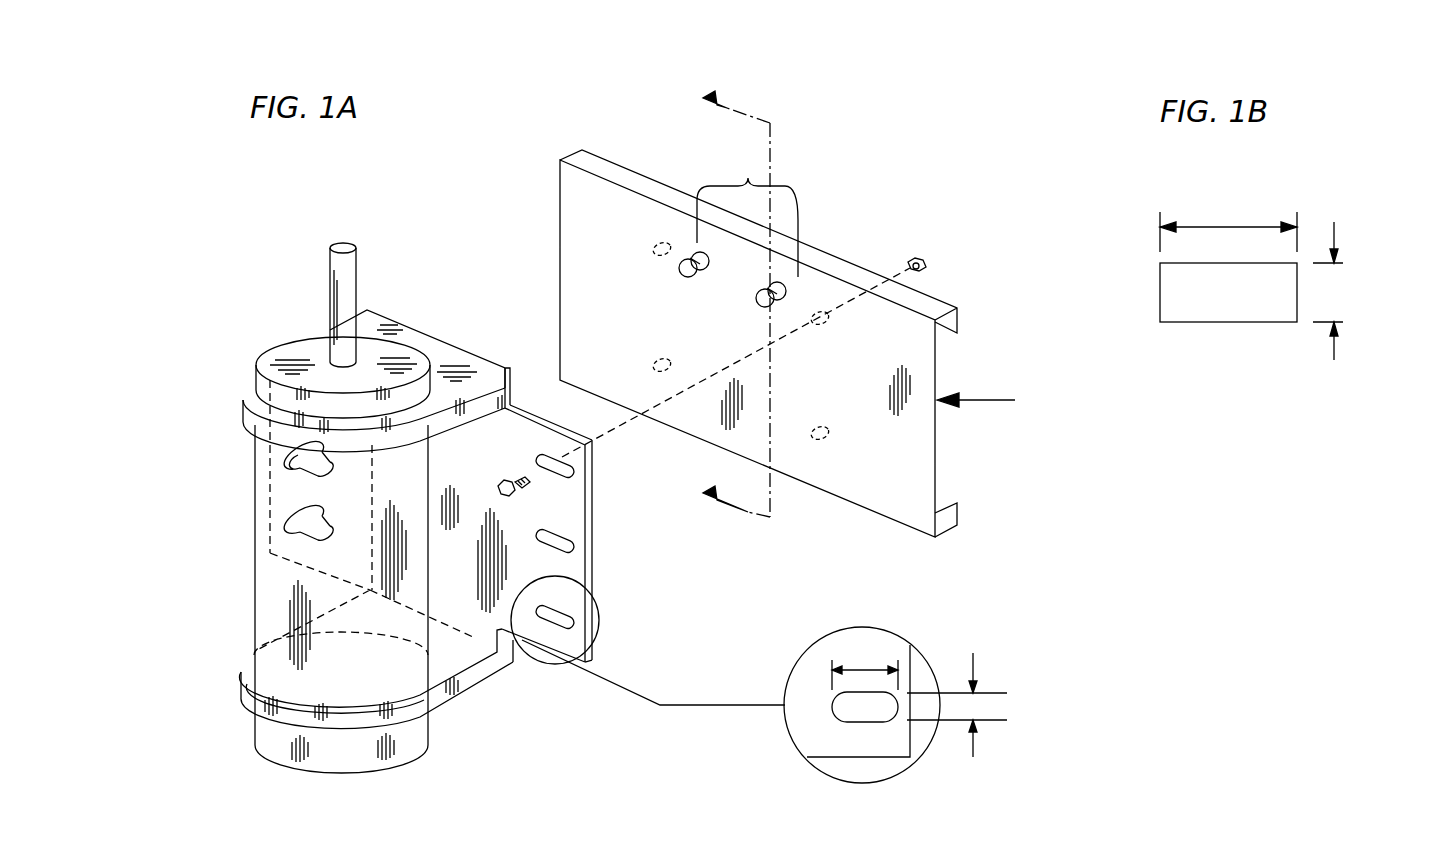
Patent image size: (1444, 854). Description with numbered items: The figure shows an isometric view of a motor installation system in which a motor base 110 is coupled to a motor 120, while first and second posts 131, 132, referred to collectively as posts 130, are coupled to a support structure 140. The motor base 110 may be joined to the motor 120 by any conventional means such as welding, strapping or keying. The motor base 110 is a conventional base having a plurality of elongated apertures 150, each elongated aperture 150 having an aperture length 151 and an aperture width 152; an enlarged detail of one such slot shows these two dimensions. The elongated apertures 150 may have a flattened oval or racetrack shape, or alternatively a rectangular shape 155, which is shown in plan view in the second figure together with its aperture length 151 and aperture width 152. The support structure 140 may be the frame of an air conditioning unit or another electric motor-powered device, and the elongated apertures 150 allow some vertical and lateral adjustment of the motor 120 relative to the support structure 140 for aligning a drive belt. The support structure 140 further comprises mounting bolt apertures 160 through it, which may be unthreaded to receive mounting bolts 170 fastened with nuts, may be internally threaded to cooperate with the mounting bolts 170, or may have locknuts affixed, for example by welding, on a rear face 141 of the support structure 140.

In FIG. 1A, the motor base 110 is at (570, 507).
In FIG. 1A, the motor 120 is at (241, 675).
In FIG. 1A, the posts 130 is at (747, 214).
In FIG. 1A, the first post 131 is at (683, 273).
In FIG. 1A, the second post 132 is at (760, 303).
In FIG. 1A, the support structure 140 is at (918, 463).
In FIG. 1A, the rear face 141 is at (997, 400).
In FIG. 1A, the elongated aperture 150 is at (570, 472).
In FIG. 1A, the aperture length 151 is at (866, 652).
In FIG. 1B, the aperture length 151 is at (1234, 224).
In FIG. 1A, the aperture width 152 is at (997, 710).
In FIG. 1B, the aperture width 152 is at (1333, 295).
In FIG. 1B, the rectangular shape 155 is at (1160, 292).
In FIG. 1A, the mounting bolt apertures 160 is at (652, 249).
In FIG. 1A, the mounting bolts 170 is at (506, 478).